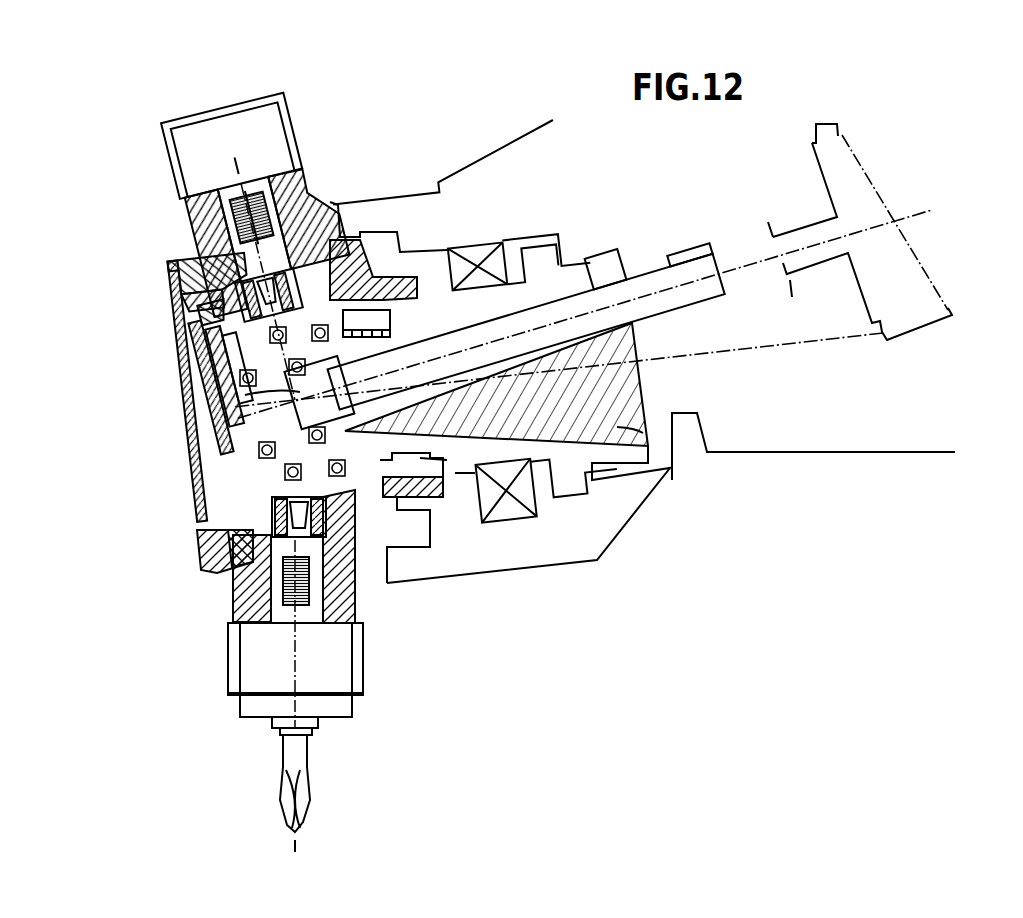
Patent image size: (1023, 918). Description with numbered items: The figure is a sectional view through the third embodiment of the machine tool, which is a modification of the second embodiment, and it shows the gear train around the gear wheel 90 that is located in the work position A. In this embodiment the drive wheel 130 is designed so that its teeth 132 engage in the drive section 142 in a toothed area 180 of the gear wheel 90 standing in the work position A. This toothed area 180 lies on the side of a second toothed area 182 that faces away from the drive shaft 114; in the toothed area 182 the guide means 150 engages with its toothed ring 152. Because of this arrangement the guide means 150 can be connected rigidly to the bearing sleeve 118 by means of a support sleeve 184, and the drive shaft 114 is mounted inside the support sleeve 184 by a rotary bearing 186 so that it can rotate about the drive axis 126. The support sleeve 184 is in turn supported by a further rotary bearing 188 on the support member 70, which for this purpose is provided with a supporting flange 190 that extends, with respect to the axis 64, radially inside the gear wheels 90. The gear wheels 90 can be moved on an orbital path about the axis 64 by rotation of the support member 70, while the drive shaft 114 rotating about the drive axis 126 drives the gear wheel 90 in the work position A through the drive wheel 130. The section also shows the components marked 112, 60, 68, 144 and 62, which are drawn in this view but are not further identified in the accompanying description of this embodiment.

The support member 70 is at (275, 197).
The gear wheel 90 is at (320, 212).
The support sleeve 184 is at (330, 287).
The rotary bearing 188 is at (383, 280).
The drive shaft 114 is at (583, 293).
The drive axis 126 is at (668, 262).
The clamping device 112 is at (907, 273).
The axis 64 is at (797, 347).
The bearing sleeve 118 is at (650, 433).
The housing 60 is at (623, 503).
The support arm 68 is at (537, 510).
The supporting flange 190 is at (375, 530).
The work position A is at (310, 780).
The toothed area 180 is at (208, 262).
The toothed ring 152 is at (232, 288).
The teeth 132 is at (228, 318).
The guide means 150 is at (240, 343).
The toothed area 182 is at (242, 372).
The rotary bearing 186 is at (252, 400).
The swivel element 144 is at (262, 425).
The swivel plate 62 is at (158, 472).
The drive wheel 130 is at (198, 497).
The drive section 142 is at (210, 578).